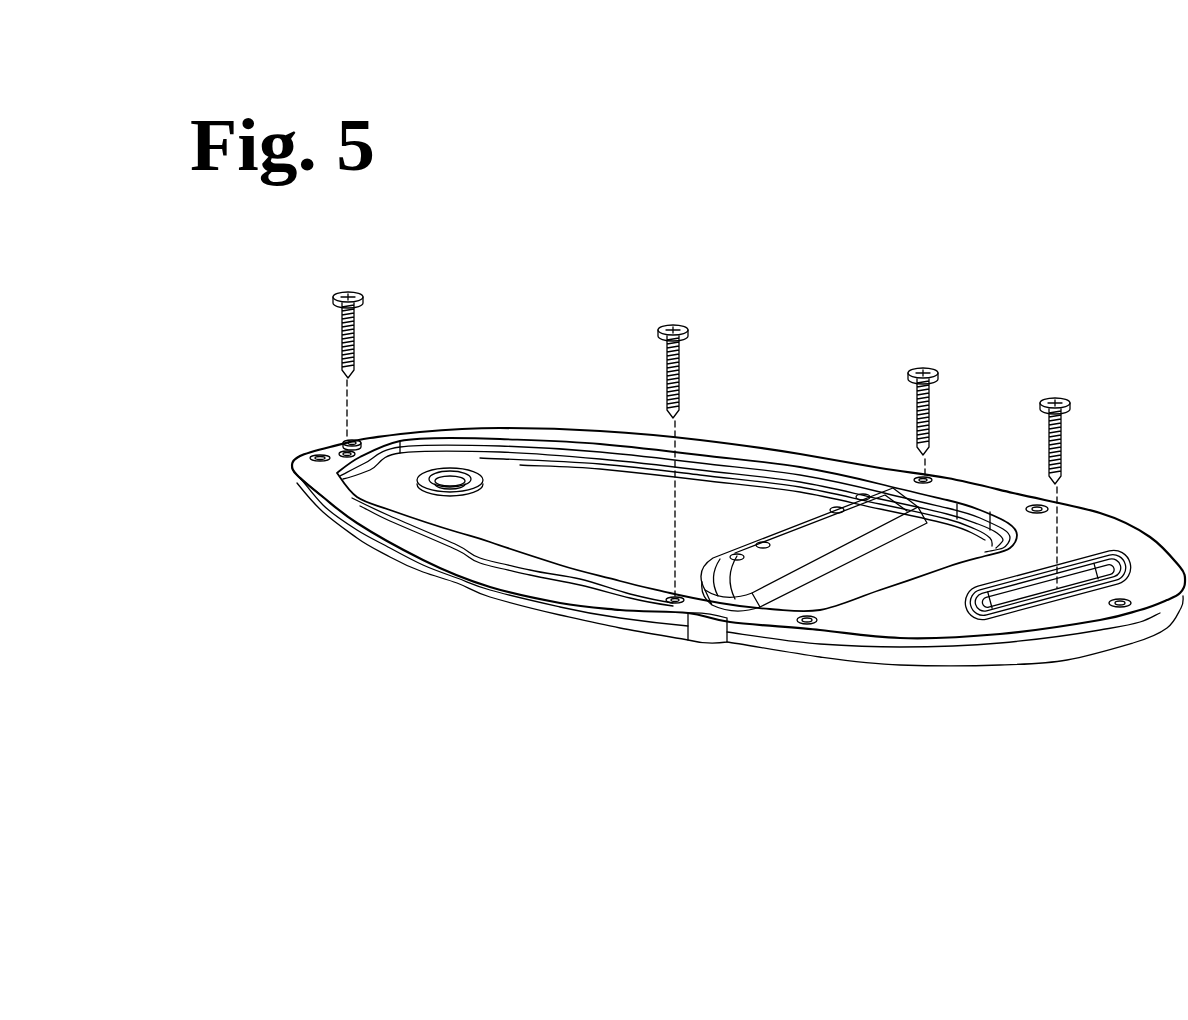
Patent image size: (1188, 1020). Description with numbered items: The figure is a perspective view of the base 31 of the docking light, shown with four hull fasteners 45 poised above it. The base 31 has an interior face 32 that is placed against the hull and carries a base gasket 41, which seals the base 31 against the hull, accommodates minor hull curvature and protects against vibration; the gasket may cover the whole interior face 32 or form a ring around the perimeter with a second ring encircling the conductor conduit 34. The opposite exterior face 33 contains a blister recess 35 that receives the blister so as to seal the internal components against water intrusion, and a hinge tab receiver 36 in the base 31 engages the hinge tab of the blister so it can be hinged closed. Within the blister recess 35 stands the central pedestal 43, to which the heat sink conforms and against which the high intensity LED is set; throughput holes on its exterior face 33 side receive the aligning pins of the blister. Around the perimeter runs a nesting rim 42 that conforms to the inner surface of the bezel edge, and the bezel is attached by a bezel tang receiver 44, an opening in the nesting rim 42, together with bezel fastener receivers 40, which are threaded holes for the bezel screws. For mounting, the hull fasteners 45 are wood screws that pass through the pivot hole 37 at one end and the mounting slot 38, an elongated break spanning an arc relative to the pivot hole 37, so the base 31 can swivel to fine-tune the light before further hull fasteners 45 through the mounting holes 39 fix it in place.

The base 31 is at (397, 649).
The interior face 32 is at (498, 616).
The exterior face 33 is at (518, 388).
The conductor conduit 34 is at (450, 478).
The blister recess 35 is at (560, 486).
The hinge tab receiver 36 is at (357, 433).
The pivot hole 37 is at (343, 437).
The mounting slot 38 is at (1080, 583).
The mounting holes 39 is at (668, 596).
The bezel fastener receivers 40 is at (790, 620).
The base gasket 41 is at (380, 553).
The nesting rim 42 is at (437, 563).
The central pedestal 43 is at (805, 525).
The bezel tang receiver 44 is at (278, 462).
The hull fasteners 45 is at (337, 330).